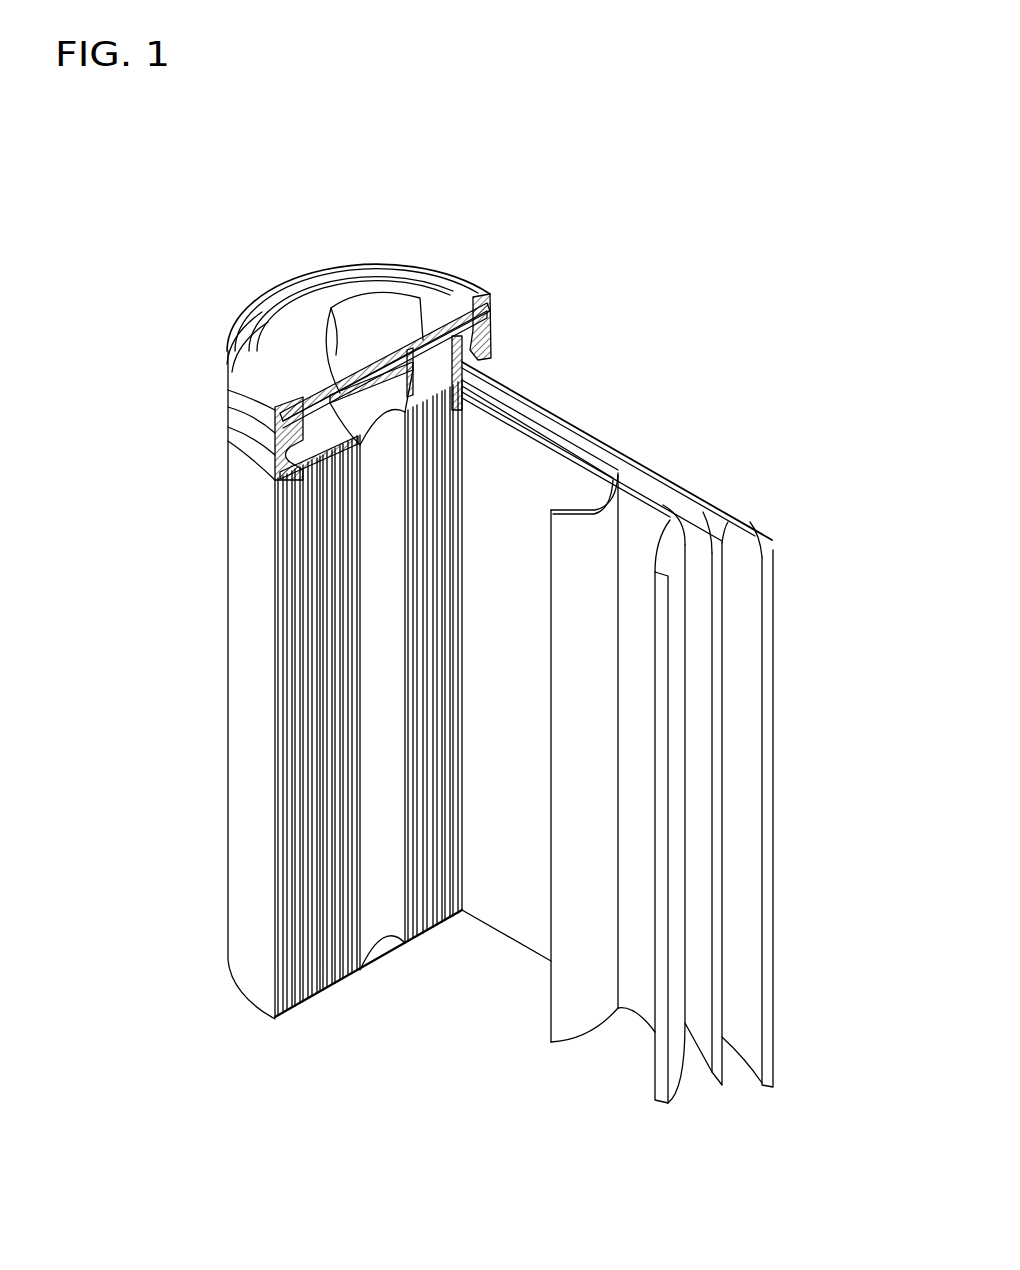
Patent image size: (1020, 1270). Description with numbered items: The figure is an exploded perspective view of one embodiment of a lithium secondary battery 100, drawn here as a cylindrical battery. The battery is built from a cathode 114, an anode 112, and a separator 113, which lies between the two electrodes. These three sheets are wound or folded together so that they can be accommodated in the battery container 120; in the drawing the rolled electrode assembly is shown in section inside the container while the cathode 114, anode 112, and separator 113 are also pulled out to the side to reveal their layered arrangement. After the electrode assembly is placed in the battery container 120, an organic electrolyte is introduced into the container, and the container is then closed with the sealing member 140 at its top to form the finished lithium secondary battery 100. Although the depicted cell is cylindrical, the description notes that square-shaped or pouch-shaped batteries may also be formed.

The lithium secondary battery 100 is at (441, 204).
The anode 112 is at (757, 530).
The separator 113 is at (602, 495).
The cathode 114 is at (669, 522).
The battery container 120 is at (236, 690).
The sealing member 140 is at (352, 312).